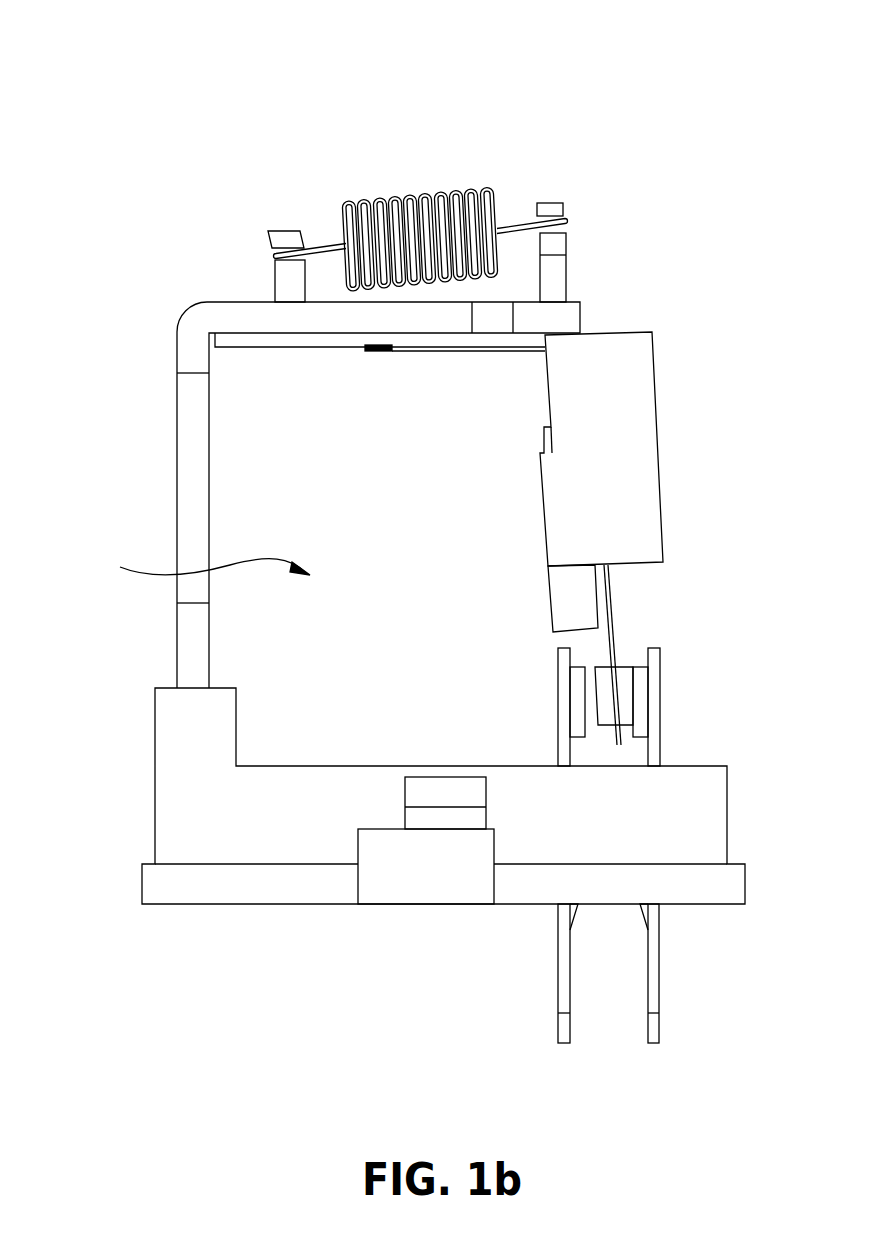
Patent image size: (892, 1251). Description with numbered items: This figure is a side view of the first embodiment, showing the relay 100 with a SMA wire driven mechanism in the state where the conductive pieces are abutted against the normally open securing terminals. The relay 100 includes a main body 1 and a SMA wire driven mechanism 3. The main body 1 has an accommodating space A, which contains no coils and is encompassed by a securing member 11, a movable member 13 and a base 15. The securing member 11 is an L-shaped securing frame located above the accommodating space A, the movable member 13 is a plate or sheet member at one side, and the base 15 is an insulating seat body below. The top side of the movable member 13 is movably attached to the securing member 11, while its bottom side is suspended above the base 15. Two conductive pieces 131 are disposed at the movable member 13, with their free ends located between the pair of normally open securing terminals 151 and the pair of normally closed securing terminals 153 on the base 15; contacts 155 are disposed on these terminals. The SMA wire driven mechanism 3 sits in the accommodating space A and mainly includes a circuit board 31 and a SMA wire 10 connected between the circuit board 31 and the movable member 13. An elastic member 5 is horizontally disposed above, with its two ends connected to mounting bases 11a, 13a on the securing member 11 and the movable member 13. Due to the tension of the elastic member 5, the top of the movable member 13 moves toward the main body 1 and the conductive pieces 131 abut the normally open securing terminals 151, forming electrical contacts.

The relay 100 is at (92, 32).
The main body 1 is at (188, 296).
The securing member 11 is at (177, 332).
The mounting base 11a is at (283, 231).
The elastic member 5 is at (411, 192).
The mounting base 13a is at (548, 203).
The SMA wire driven mechanism 3 is at (448, 417).
The circuit board 31 is at (300, 348).
The SMA wire 10 is at (425, 350).
The movable member 13 is at (645, 453).
The conductive pieces 131 is at (618, 612).
The contacts 155 is at (640, 710).
The base 15 is at (710, 821).
The normally closed securing terminals 153 is at (558, 994).
The normally open securing terminals 151 is at (659, 993).
The accommodating space A is at (203, 562).